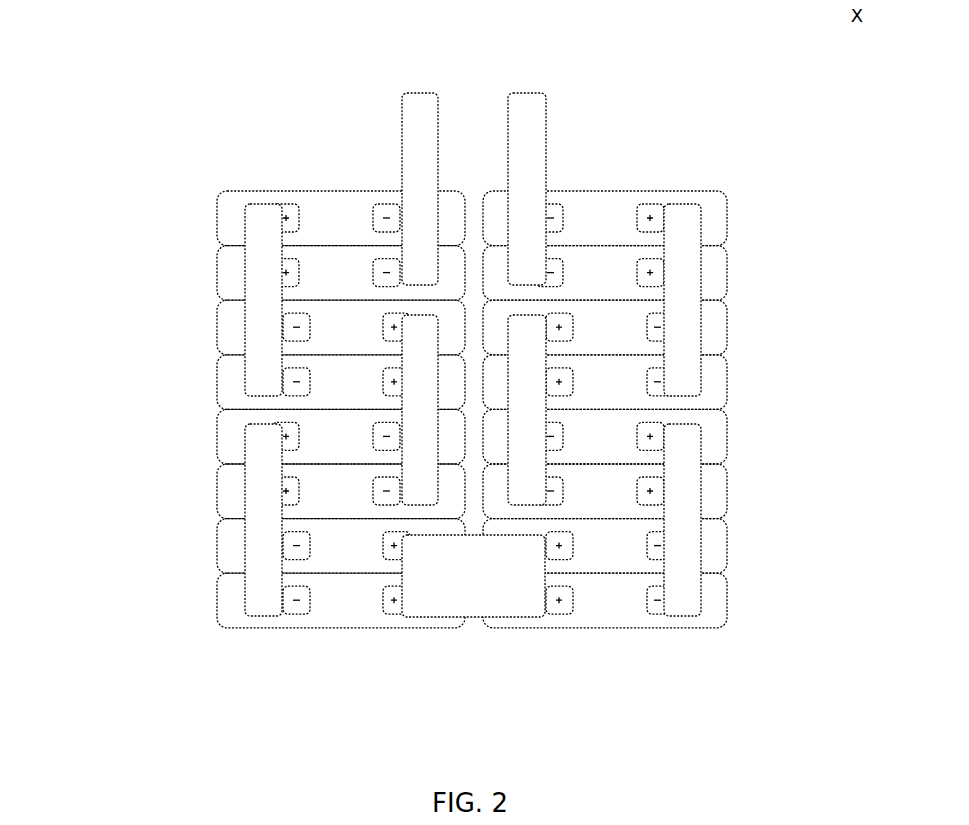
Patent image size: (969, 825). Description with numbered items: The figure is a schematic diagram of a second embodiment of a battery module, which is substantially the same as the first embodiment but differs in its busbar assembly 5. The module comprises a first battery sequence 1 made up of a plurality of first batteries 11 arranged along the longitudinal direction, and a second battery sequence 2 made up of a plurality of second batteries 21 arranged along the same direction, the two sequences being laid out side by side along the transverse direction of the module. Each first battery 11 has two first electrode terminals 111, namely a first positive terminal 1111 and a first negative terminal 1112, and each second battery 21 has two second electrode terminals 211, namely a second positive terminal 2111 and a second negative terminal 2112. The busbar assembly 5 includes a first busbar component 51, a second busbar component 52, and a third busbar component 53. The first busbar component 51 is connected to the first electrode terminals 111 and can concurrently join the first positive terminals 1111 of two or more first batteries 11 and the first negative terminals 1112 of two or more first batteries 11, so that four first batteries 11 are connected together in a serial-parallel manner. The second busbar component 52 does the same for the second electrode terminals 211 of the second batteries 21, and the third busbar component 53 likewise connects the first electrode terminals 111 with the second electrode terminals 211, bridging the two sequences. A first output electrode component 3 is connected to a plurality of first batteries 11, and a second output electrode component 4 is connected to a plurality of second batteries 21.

The first battery sequence 1 is at (127, 215).
The first battery 11 is at (220, 223).
The first electrode terminal 111 is at (287, 132).
The first positive terminal 1111 is at (280, 195).
The first negative terminal 1112 is at (387, 195).
The second battery sequence 2 is at (770, 210).
The second battery 21 is at (718, 275).
The second electrode terminal 211 is at (592, 124).
The second positive terminal 2111 is at (555, 197).
The second negative terminal 2112 is at (659, 197).
The first output electrode component 3 is at (418, 105).
The second output electrode component 4 is at (528, 107).
The busbar assembly 5 is at (500, 660).
The first busbar component 51 is at (258, 284).
The second busbar component 52 is at (692, 325).
The third busbar component 53 is at (473, 605).